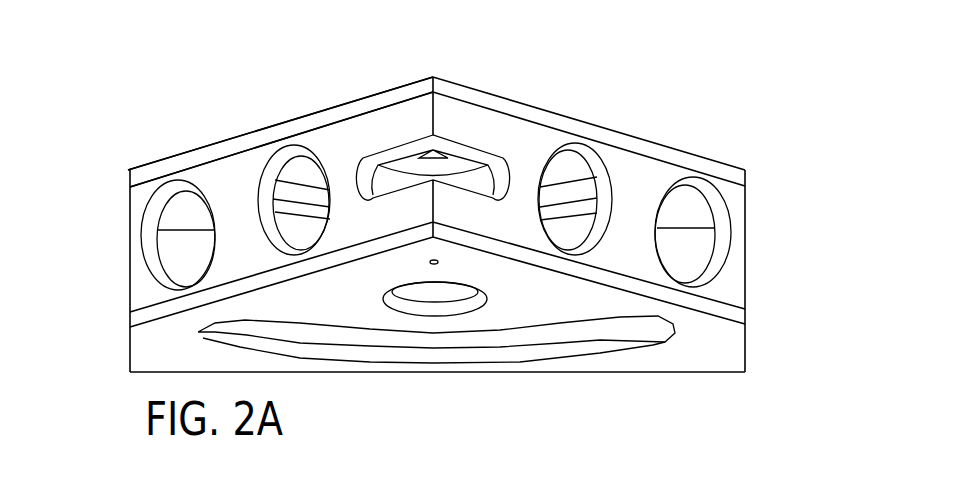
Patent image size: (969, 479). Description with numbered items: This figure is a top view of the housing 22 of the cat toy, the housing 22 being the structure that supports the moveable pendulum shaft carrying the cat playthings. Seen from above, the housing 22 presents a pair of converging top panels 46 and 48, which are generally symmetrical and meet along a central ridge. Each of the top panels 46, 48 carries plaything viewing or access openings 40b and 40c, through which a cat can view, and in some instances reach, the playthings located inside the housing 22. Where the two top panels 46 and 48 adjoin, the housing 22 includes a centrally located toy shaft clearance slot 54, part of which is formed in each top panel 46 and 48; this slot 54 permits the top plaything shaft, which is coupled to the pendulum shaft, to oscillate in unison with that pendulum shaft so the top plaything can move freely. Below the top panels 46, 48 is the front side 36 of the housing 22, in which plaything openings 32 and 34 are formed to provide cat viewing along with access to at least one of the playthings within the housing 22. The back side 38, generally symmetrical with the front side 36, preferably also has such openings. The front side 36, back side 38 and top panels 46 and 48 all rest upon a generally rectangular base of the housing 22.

The housing 22 is at (445, 248).
The plaything opening 32 is at (392, 303).
The plaything opening 34 is at (602, 355).
The front side 36 is at (712, 357).
The back side 38 is at (212, 145).
The plaything viewing or access opening 40b is at (142, 218).
The plaything viewing or access opening 40c is at (282, 148).
The top panel 46 is at (143, 192).
The top panel 48 is at (630, 168).
The toy shaft clearance slot 54 is at (473, 147).